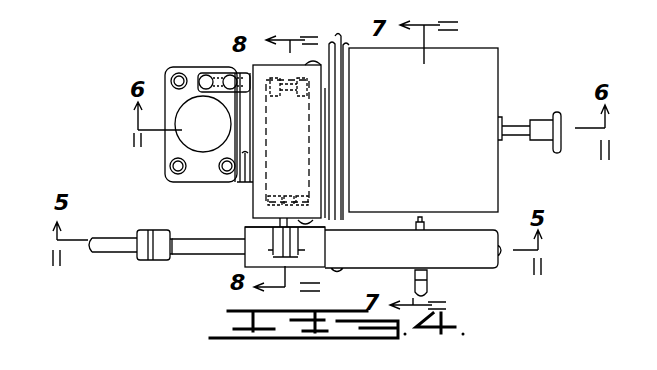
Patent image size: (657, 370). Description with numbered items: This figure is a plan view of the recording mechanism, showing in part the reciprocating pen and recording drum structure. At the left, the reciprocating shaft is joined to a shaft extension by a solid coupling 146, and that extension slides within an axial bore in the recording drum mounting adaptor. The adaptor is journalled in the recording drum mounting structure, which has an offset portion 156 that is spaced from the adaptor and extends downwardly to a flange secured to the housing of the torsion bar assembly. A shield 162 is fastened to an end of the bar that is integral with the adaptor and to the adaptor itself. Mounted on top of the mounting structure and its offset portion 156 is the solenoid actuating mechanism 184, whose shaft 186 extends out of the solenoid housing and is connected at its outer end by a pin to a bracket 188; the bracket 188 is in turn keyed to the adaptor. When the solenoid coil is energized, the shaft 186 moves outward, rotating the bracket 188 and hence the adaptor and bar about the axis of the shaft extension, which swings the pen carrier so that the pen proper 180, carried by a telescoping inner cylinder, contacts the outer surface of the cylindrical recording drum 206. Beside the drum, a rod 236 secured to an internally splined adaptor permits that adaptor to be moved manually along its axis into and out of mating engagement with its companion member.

The solid coupling 146 is at (150, 208).
The offset portion of mounting structure 156 is at (188, 73).
The shield 162 is at (481, 260).
The pen proper 180 is at (437, 227).
The solenoid actuating mechanism 184 is at (305, 135).
The shaft 186 is at (252, 230).
The bracket 188 is at (272, 251).
The cylindrical recording drum 206 is at (492, 195).
The rod 236 is at (514, 125).